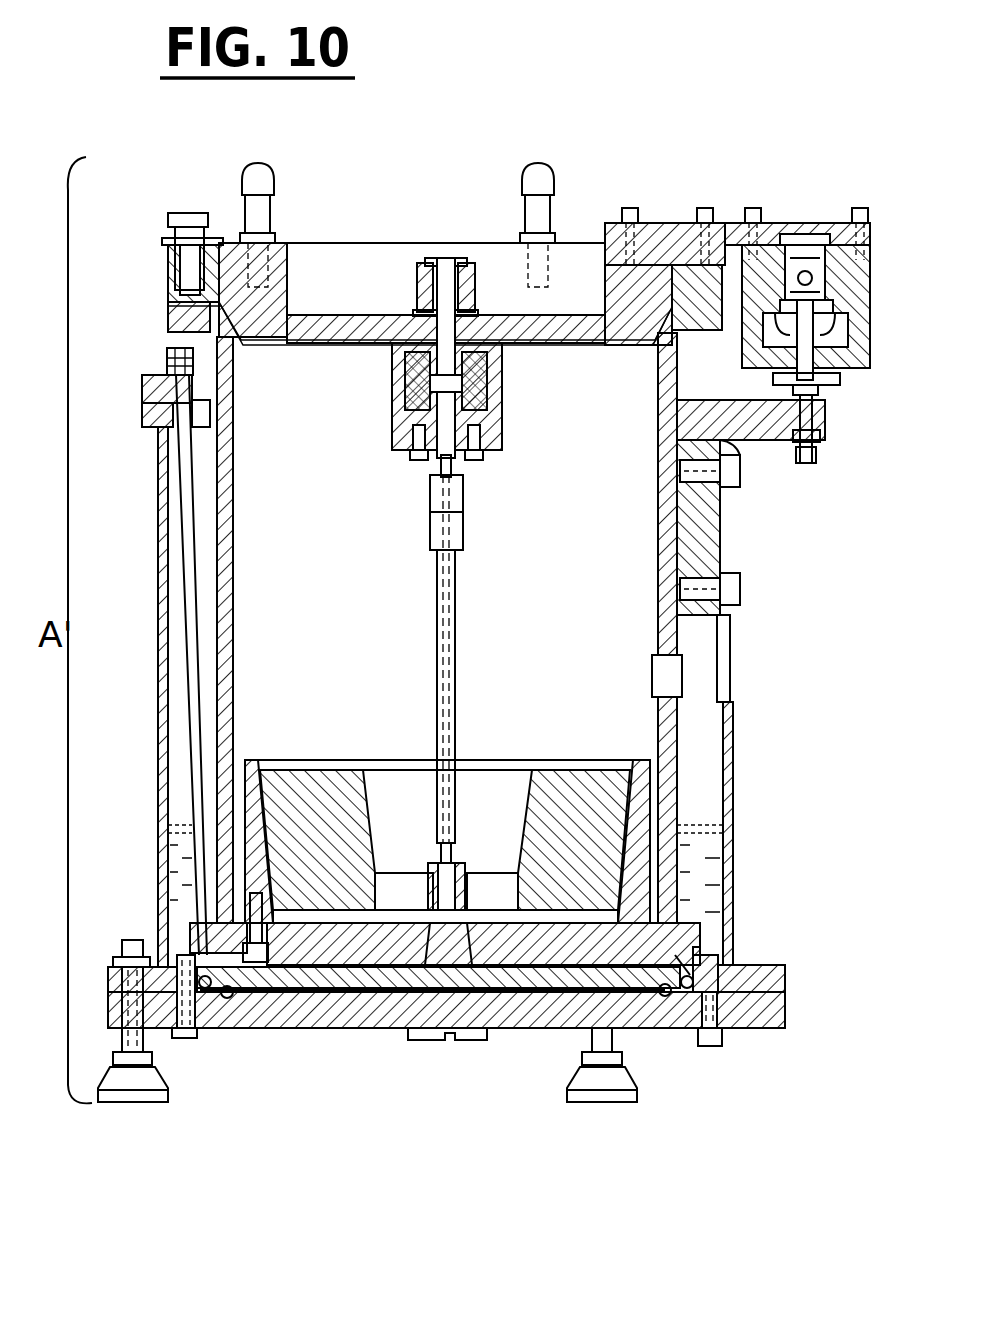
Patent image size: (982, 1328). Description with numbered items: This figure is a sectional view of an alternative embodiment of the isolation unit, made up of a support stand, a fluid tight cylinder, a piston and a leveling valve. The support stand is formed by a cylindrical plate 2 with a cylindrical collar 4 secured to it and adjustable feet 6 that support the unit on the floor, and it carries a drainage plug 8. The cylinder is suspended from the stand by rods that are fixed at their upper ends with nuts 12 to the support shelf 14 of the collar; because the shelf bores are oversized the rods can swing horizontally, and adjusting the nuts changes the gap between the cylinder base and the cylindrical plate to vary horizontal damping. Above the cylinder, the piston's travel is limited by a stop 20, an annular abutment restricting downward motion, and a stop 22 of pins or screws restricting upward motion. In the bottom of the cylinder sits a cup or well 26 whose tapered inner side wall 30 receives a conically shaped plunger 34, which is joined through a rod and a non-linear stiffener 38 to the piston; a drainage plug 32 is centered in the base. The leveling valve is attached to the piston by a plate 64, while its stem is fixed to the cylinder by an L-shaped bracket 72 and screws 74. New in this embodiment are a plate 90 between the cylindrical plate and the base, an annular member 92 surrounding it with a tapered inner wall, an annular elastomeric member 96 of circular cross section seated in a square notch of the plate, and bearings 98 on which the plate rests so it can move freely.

The cylindrical plate 2 is at (380, 1028).
The cylindrical collar 4 is at (160, 853).
The adjustable feet 6 is at (150, 1100).
The drainage plug 8 is at (470, 1040).
The nuts 12 is at (168, 358).
The support shelf 14 is at (142, 385).
The stop 20 is at (168, 273).
The stop 22 is at (190, 213).
The cup or well 26 is at (255, 760).
The inner side wall 30 is at (618, 795).
The drainage plug 32 is at (462, 950).
The conically shaped plunger 34 is at (345, 770).
The non-linear stiffener 38 is at (380, 452).
The plate 64 is at (662, 223).
The L-shaped bracket 72 is at (770, 440).
The screws 74 is at (742, 590).
The plate 90 is at (345, 965).
The annular member 92 is at (185, 957).
The annular elastomeric member 96 is at (217, 1030).
The bearings 98 is at (665, 997).